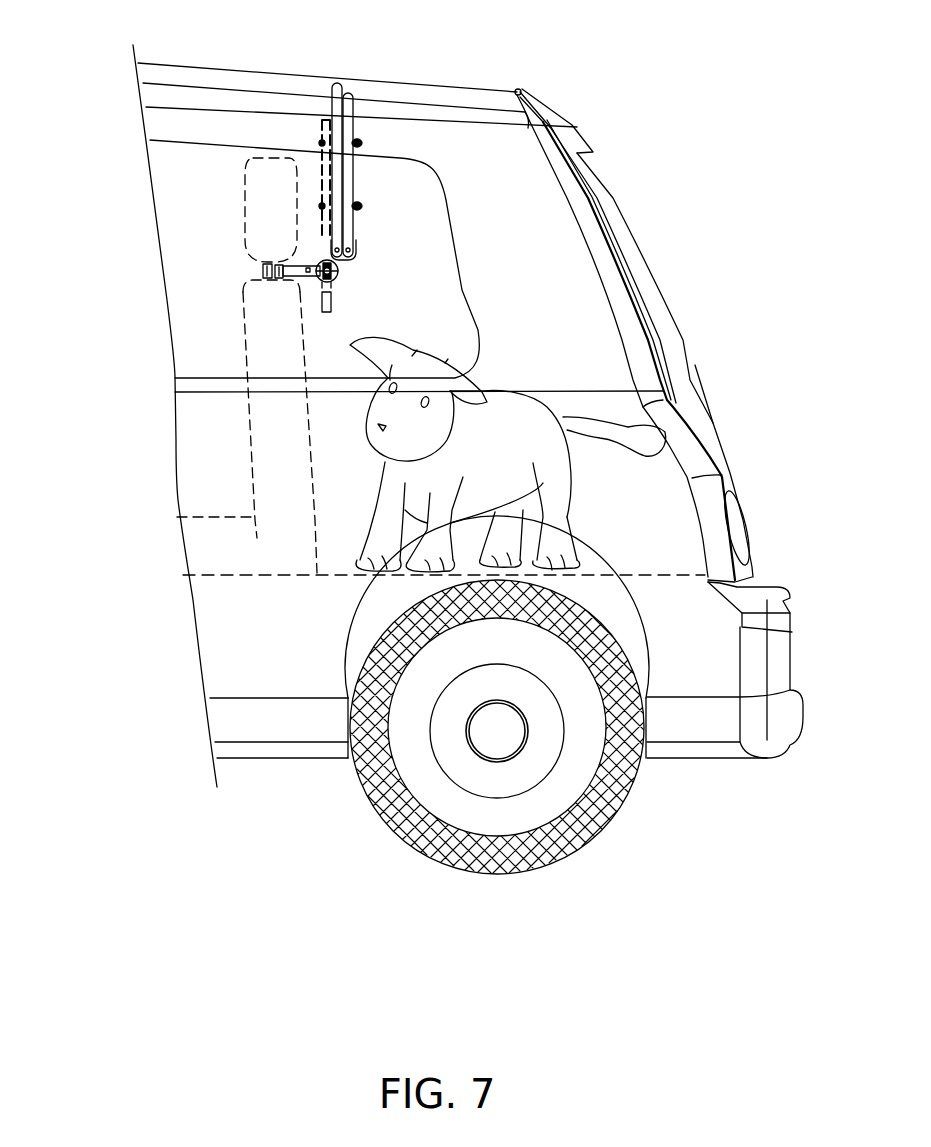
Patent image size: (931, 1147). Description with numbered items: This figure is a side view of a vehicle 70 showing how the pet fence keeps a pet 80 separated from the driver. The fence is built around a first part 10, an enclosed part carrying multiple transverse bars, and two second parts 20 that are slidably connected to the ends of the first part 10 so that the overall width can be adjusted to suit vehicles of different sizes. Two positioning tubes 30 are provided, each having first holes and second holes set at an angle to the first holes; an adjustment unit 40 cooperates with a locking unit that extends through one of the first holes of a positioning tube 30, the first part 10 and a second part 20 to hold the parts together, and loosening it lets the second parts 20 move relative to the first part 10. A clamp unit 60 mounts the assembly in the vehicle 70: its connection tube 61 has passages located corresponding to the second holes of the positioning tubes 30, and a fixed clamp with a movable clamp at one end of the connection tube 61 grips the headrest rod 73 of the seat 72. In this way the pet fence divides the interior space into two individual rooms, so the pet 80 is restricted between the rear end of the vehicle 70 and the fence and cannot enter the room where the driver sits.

The first part 10 is at (337, 82).
The second part 20 is at (350, 93).
The positioning tube 30 is at (328, 173).
The adjustment unit 40 is at (360, 143).
The clamp unit 60 is at (303, 284).
The connection tube 61 is at (290, 281).
The vehicle 70 is at (690, 730).
The seat 72 is at (260, 190).
The headrest rod 73 is at (262, 273).
The pet 80 is at (537, 420).